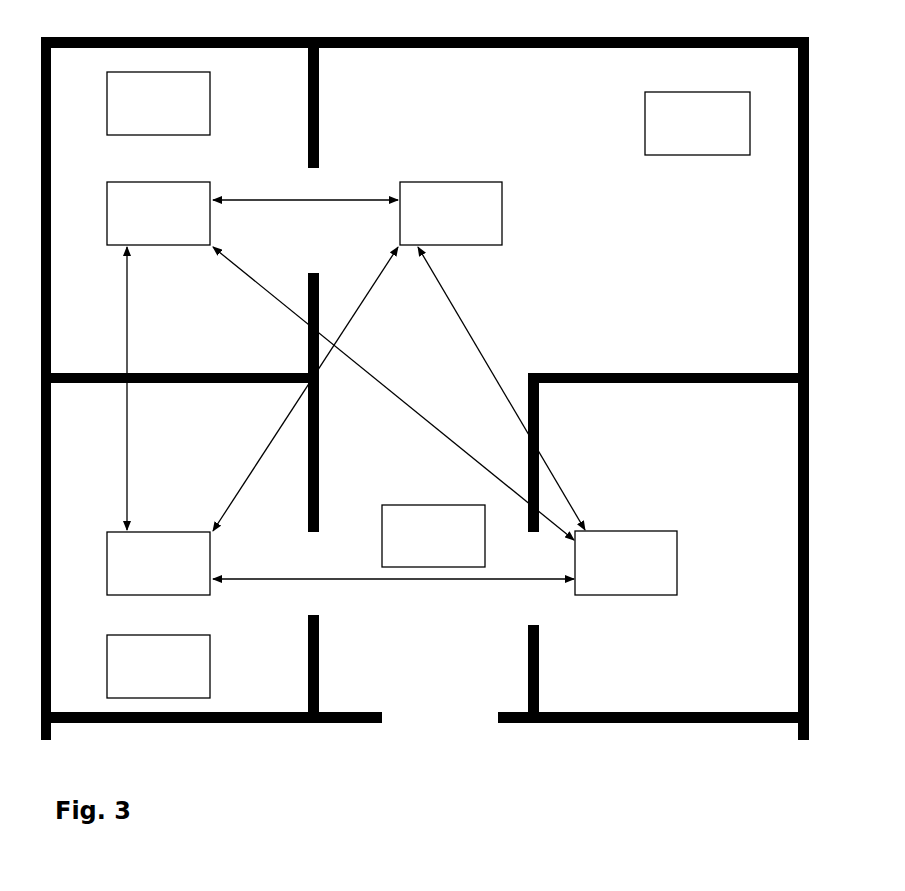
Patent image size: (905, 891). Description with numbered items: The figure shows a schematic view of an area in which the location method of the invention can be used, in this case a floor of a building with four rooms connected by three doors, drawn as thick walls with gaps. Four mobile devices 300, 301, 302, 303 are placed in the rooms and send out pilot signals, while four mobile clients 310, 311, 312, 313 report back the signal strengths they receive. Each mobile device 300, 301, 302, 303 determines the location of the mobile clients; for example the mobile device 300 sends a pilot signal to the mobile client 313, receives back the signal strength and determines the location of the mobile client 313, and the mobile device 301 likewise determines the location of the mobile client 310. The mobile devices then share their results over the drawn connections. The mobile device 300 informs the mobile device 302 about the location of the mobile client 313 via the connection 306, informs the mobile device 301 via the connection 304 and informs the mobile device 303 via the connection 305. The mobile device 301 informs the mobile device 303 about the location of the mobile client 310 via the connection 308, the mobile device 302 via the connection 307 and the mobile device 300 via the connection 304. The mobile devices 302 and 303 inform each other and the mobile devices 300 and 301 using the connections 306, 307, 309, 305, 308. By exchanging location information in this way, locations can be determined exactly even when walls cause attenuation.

The mobile device 300 is at (168, 221).
The mobile device 301 is at (168, 569).
The mobile device 302 is at (461, 221).
The mobile device 303 is at (636, 569).
The connection 304 is at (194, 349).
The connection 305 is at (426, 484).
The connection 306 is at (318, 247).
The connection 307 is at (231, 447).
The connection 308 is at (426, 624).
The connection 309 is at (541, 307).
The mobile client 310 is at (168, 674).
The mobile client 311 is at (708, 129).
The mobile client 312 is at (444, 546).
The mobile client 313 is at (168, 109).